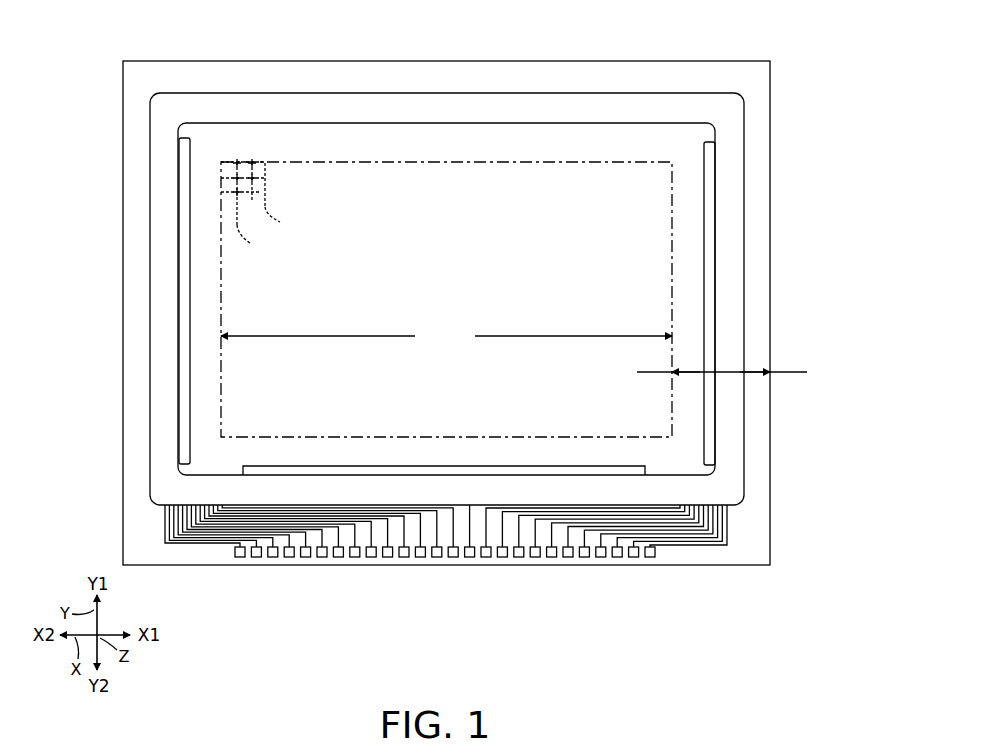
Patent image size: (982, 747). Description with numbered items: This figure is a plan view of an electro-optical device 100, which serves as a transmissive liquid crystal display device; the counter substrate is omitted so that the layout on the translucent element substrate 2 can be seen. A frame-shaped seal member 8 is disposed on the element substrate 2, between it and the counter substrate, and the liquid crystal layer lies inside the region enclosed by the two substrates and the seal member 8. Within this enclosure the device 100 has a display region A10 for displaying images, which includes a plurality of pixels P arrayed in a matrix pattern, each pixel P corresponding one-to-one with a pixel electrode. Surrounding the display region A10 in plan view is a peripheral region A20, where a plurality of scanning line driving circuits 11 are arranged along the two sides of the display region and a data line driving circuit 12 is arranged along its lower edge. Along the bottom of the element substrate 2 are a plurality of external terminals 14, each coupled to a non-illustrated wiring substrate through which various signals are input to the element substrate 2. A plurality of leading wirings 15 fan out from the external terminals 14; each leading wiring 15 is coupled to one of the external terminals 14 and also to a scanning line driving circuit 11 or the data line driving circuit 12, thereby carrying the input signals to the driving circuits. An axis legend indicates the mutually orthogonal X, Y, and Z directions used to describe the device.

The electro-optical device 100 is at (473, 312).
The element substrate 2 is at (720, 57).
The seal member 8 is at (744, 178).
The scanning line driving circuit 11 is at (191, 160).
The data line driving circuit 12 is at (635, 466).
The external terminal 14 is at (488, 560).
The leading wiring 15 is at (690, 549).
The pixel P is at (446, 298).
The display region A10 is at (446, 336).
The peripheral region A20 is at (730, 360).